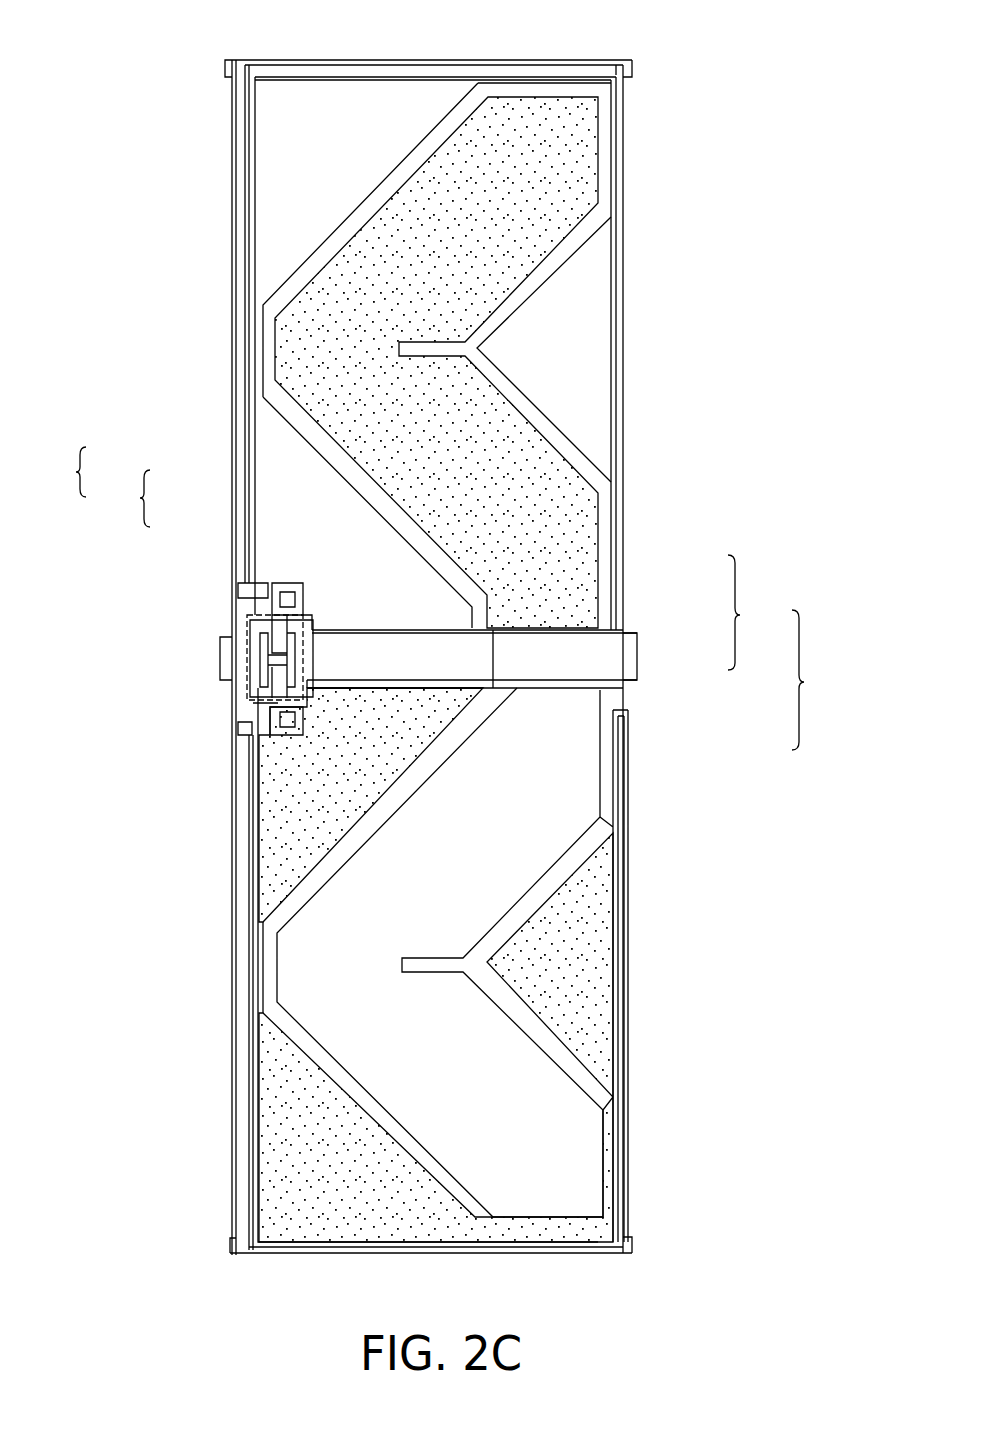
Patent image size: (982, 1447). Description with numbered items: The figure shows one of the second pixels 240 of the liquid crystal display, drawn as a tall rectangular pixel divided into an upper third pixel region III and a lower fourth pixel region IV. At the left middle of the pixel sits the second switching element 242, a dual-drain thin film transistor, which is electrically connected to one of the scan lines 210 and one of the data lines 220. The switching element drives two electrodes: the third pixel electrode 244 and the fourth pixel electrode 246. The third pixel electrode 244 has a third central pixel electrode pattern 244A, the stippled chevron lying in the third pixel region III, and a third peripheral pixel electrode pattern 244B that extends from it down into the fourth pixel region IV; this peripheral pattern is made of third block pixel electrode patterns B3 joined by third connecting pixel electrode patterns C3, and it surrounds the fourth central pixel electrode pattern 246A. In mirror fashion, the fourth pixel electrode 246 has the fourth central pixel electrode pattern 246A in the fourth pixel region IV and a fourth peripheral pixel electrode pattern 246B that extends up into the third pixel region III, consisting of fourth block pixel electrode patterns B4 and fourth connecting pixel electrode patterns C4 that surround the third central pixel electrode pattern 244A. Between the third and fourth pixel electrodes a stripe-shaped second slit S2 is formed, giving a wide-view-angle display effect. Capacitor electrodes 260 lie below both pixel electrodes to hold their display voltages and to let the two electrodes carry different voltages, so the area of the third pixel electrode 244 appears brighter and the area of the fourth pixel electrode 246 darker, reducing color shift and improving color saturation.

The data line 220 is at (242, 1222).
The second pixel 240 is at (774, 1298).
The capacitor electrode 260 is at (421, 77).
The fourth connecting pixel electrode pattern C4 is at (509, 83).
The fourth block pixel electrode pattern B4 is at (320, 152).
The third pixel electrode 244 is at (63, 472).
The third central pixel electrode pattern 244A is at (320, 350).
The third peripheral pixel electrode pattern 244B is at (120, 498).
The third connecting pixel electrode pattern C3 is at (378, 703).
The third block pixel electrode pattern B3 is at (487, 657).
The second slit S2 is at (425, 141).
The fourth pixel electrode 246 is at (817, 680).
The fourth central pixel electrode pattern 246A is at (590, 748).
The fourth peripheral pixel electrode pattern 246B is at (759, 612).
The second switching element 242 is at (247, 695).
The scan line 210 is at (353, 670).
The third pixel region III is at (420, 256).
The fourth pixel region IV is at (415, 883).